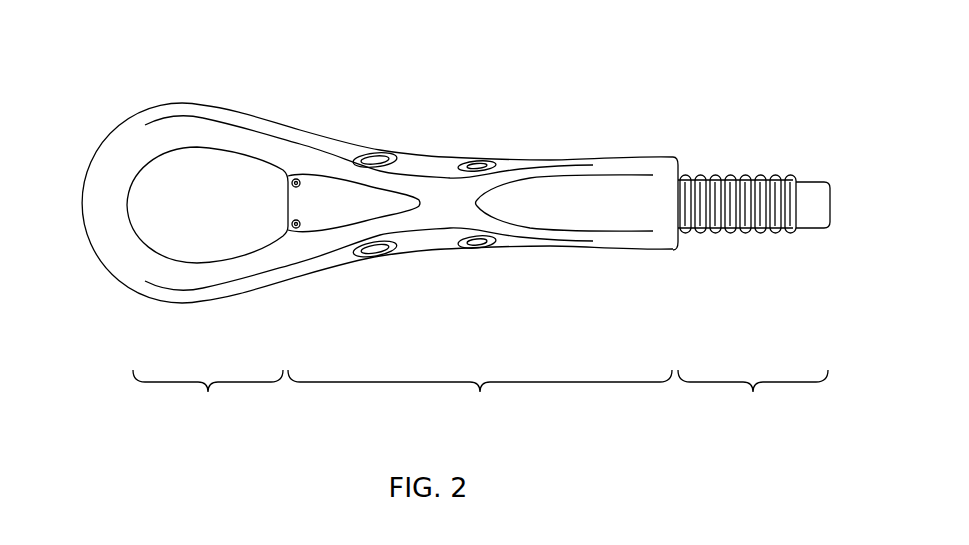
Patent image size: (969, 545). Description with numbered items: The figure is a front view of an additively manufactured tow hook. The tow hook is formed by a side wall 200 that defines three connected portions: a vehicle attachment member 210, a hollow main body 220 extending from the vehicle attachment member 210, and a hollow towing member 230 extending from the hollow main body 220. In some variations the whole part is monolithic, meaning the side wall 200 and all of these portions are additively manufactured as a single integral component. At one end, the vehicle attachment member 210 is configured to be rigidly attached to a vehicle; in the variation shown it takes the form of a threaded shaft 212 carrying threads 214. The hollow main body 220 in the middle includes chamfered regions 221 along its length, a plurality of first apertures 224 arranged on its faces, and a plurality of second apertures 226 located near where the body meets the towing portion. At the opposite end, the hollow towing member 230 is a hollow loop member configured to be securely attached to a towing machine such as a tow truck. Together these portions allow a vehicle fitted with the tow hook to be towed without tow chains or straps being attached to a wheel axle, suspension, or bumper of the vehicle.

The side wall 200 is at (192, 125).
The vehicle attachment member 210 is at (754, 251).
The threaded shaft 212 is at (715, 148).
The threads 214 is at (766, 180).
The hollow main body 220 is at (440, 244).
The chamfered regions 221 is at (332, 192).
The first apertures 224 is at (378, 160).
The second apertures 226 is at (296, 179).
The hollow towing member 230 is at (191, 241).